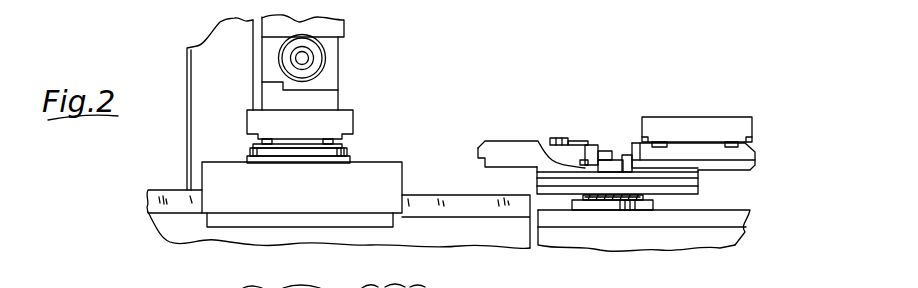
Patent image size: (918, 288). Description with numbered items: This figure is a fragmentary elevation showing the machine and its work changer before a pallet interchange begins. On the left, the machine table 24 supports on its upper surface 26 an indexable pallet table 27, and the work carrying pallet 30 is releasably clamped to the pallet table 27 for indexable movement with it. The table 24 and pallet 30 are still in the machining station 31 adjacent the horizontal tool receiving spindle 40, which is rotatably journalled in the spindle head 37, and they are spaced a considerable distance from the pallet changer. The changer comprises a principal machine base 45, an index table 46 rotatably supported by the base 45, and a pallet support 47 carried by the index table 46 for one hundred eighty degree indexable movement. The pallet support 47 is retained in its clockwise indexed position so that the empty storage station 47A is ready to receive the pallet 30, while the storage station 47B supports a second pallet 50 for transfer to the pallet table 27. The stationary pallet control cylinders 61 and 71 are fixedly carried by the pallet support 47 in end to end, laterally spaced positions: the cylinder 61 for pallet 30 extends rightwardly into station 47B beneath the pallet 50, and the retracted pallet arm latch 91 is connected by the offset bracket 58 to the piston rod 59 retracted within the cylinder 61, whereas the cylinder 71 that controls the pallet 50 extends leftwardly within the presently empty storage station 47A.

The machine table 24 is at (350, 196).
The upper surface 26 is at (219, 158).
The pallet table 27 is at (264, 150).
The work carrying pallet 30 is at (341, 118).
The machining station 31 is at (348, 104).
The spindle head 37 is at (330, 29).
The tool receiving spindle 40 is at (309, 58).
The machine base 45 is at (687, 237).
The index table 46 is at (602, 202).
The pallet support 47 is at (697, 189).
The pallet storage station 47A is at (517, 133).
The pallet storage station 47B is at (760, 134).
The pallet 50 is at (717, 125).
The offset bracket 58 is at (589, 146).
The piston rod 59 is at (592, 157).
The cylinder 61 is at (633, 165).
The cylinder 71 is at (608, 150).
The pallet arm latch 91 is at (570, 137).